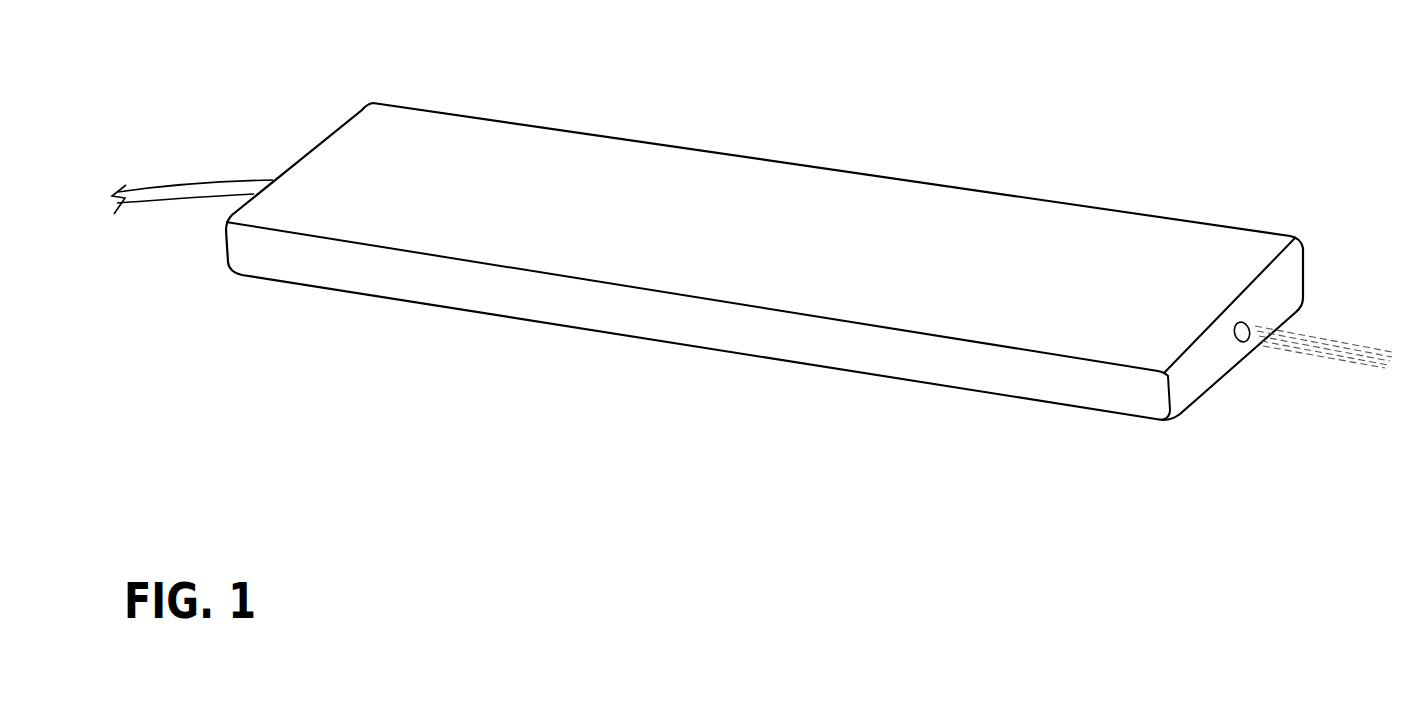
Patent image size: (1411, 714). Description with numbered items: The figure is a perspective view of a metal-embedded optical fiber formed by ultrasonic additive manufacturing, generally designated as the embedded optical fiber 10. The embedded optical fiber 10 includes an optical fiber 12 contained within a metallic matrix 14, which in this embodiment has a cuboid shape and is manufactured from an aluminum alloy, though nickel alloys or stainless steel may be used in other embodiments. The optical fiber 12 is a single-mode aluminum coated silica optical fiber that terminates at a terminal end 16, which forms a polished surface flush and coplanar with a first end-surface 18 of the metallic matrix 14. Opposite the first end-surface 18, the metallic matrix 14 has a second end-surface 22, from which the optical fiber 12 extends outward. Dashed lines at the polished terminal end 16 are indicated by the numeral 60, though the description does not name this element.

The embedded optical fiber 10 is at (832, 110).
The optical fiber 12 is at (162, 193).
The metallic matrix 14 is at (512, 157).
The terminal end 16 is at (1246, 337).
The first end-surface 18 is at (1282, 285).
The second end-surface 22 is at (347, 118).
The emitted light beam 60 is at (1345, 357).